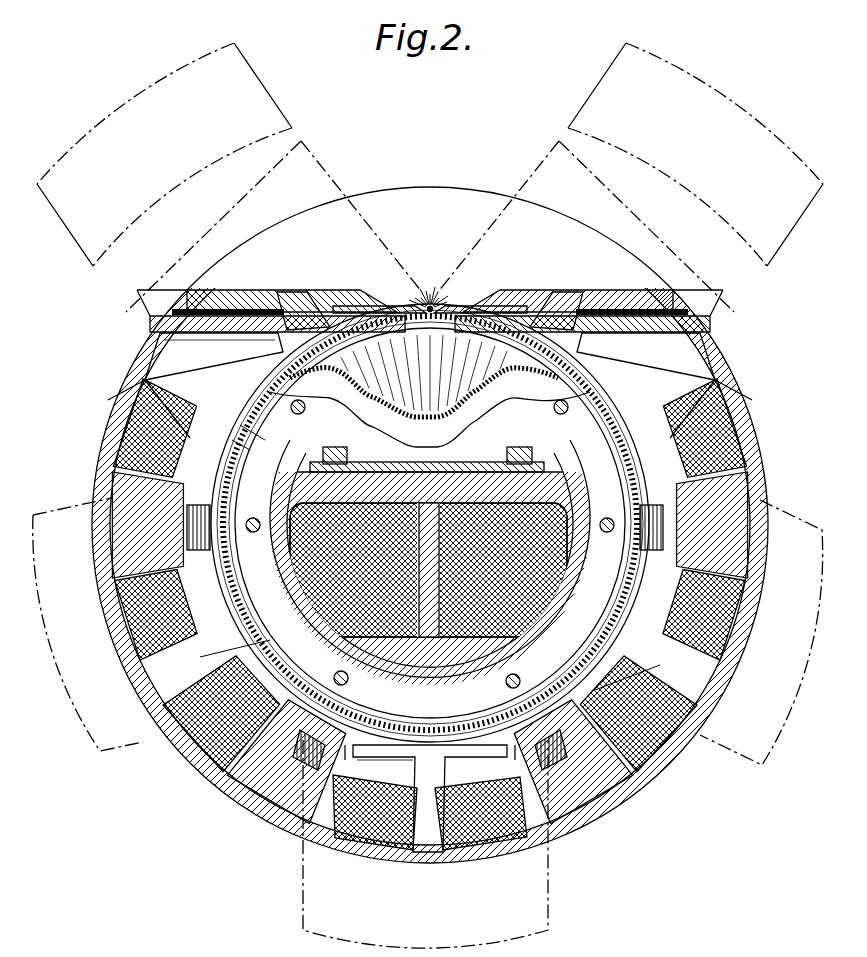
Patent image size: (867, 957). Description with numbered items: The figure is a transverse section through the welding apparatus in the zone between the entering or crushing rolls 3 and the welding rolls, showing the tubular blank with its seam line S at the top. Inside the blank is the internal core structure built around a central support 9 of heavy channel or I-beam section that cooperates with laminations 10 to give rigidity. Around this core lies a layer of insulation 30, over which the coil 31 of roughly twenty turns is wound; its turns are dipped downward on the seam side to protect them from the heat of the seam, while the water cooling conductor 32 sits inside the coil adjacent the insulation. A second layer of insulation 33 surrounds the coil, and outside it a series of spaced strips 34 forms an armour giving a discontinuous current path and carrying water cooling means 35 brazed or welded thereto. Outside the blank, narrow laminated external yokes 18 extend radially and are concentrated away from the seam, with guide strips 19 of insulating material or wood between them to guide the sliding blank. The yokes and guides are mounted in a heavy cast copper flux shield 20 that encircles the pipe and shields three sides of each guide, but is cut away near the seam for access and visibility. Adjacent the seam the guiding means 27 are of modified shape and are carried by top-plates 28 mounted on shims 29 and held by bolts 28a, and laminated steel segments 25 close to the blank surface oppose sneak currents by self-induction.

The entering or crushing rolls 3 is at (303, 148).
The central support 9 is at (424, 668).
The laminations 10 is at (322, 593).
The external yokes 18 is at (118, 648).
The guide strips 19 is at (748, 538).
The flux shield 20 is at (712, 692).
The laminated steel segments 25 is at (414, 204).
The guiding means 27 is at (366, 302).
The top-plates 28 is at (246, 290).
The bolts 28a is at (135, 366).
The shims 29 is at (291, 296).
The layer of insulation 30 is at (472, 676).
The coil 31 is at (366, 742).
The water cooling conductor 32 is at (560, 594).
The second layer of insulation 33 is at (242, 610).
The spaced strips 34 is at (600, 686).
The water cooling means 35 is at (220, 350).
The seam line S is at (430, 280).